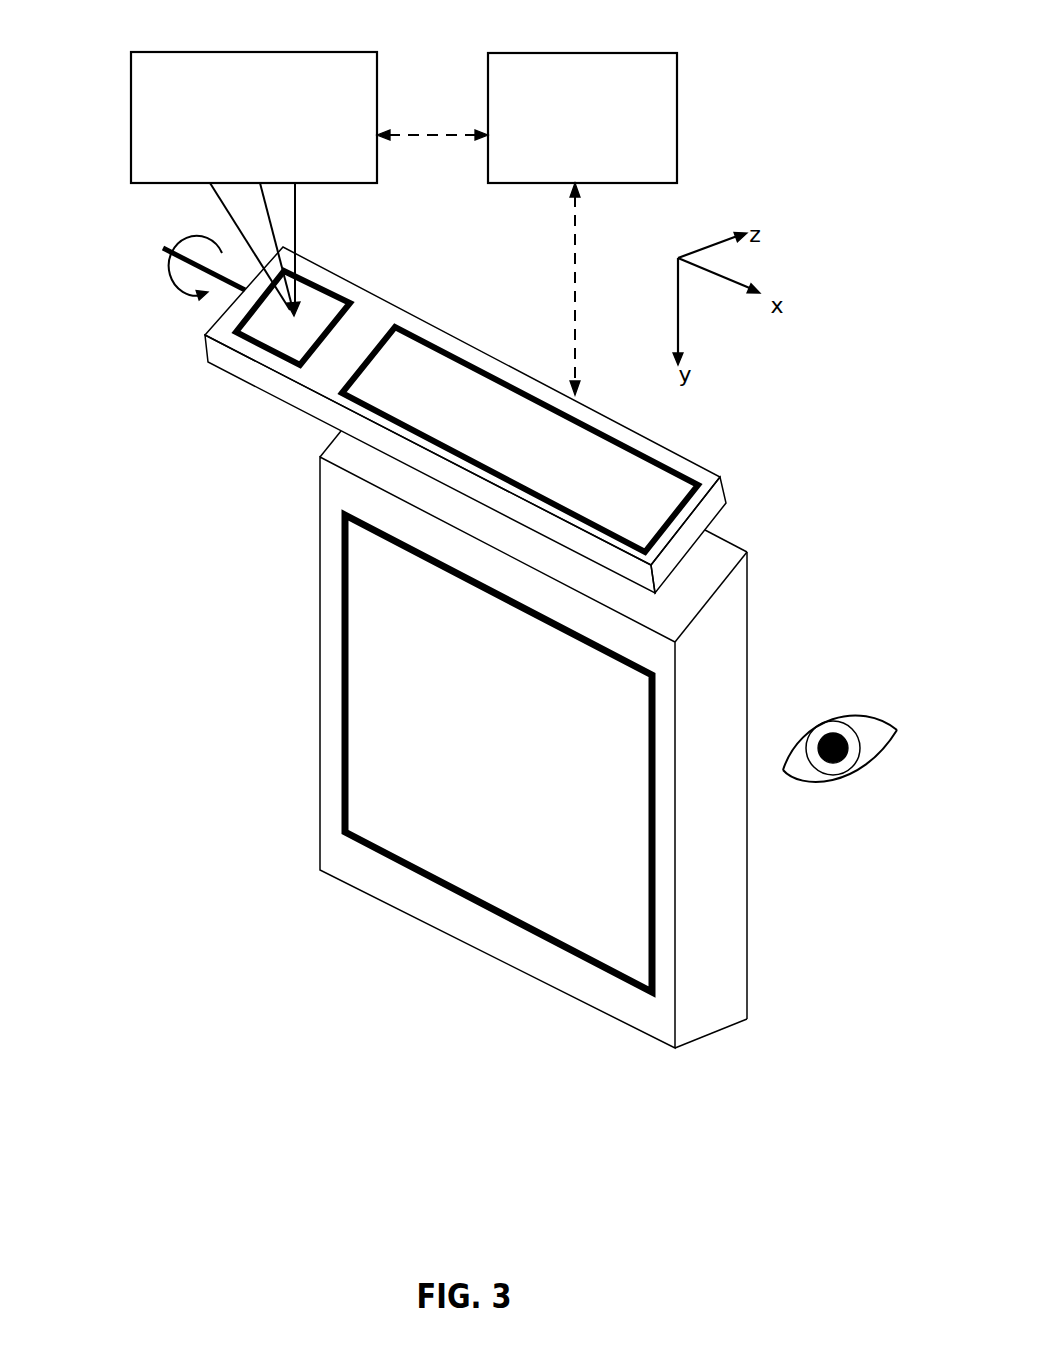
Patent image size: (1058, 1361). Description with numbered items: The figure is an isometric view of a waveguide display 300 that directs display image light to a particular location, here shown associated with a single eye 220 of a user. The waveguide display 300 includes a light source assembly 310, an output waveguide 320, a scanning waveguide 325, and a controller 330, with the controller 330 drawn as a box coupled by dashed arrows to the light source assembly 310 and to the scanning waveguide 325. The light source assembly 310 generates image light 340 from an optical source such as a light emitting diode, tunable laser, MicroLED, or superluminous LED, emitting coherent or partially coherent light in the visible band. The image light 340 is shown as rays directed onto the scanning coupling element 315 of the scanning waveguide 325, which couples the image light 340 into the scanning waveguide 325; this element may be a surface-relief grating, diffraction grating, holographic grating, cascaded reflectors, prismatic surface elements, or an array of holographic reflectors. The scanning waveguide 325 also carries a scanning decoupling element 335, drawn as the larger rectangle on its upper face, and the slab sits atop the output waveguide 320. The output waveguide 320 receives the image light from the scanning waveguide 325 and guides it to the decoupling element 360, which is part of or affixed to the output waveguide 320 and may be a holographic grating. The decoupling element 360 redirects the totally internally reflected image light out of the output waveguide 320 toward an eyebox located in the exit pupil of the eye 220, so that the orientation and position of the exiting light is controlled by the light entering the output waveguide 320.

The waveguide display 300 is at (73, 31).
The light source assembly 310 is at (254, 117).
The controller 330 is at (527, 224).
The image light 340 is at (292, 245).
The scanning coupling element 315 is at (265, 323).
The scanning waveguide 325 is at (262, 375).
The scanning decoupling element 335 is at (573, 453).
The decoupling element 360 is at (427, 714).
The output waveguide 320 is at (542, 982).
The eye 220 is at (840, 777).